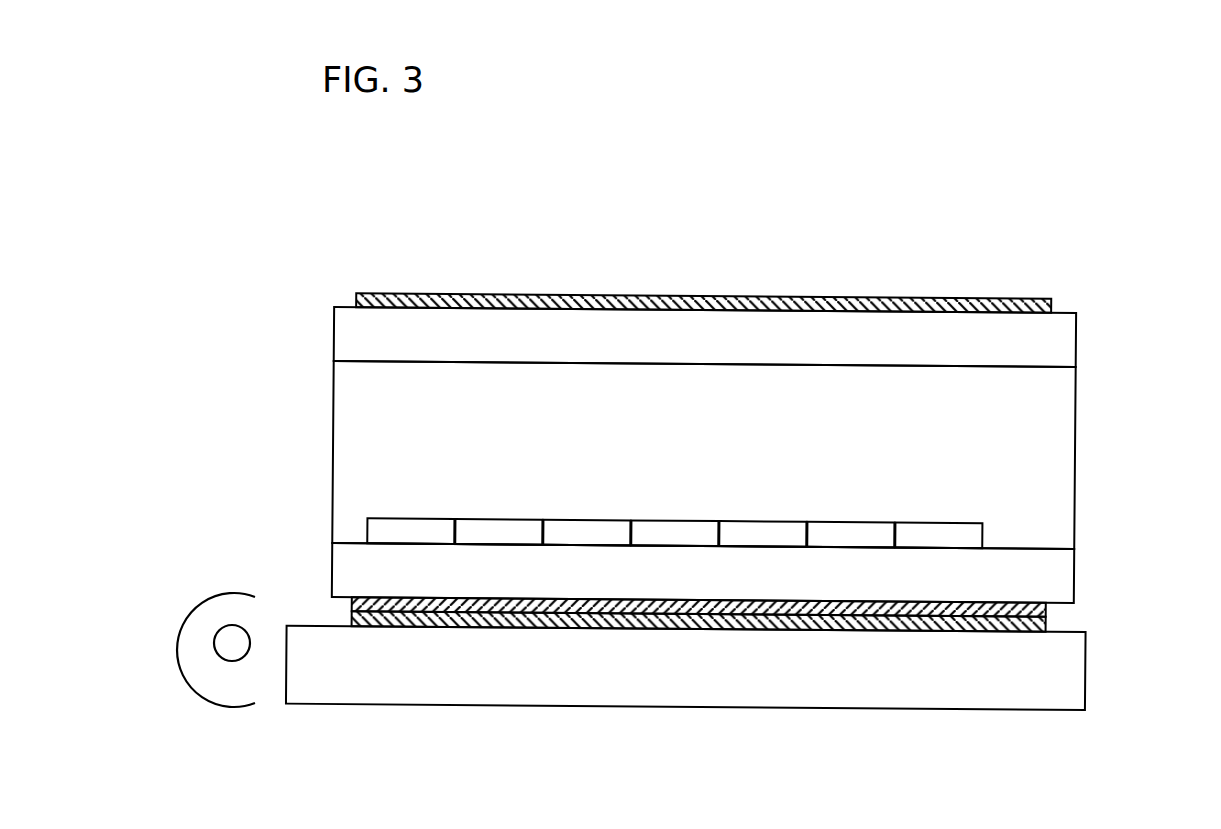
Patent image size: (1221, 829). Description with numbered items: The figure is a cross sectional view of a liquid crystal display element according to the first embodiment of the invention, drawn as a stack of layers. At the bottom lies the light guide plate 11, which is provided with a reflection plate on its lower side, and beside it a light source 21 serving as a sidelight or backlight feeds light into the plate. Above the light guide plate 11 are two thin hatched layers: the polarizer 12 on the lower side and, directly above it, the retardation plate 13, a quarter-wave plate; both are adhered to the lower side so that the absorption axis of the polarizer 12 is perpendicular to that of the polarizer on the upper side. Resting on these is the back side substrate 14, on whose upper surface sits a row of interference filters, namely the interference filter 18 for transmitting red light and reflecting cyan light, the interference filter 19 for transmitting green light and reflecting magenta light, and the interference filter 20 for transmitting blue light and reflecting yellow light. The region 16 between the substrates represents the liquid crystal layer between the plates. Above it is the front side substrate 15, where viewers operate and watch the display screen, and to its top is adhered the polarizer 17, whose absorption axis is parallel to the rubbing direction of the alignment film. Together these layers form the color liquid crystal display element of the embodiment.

The light guide plate 11 is at (1042, 673).
The polarizer 12 is at (1035, 635).
The retardation plate 13 is at (1045, 610).
The back side substrate 14 is at (345, 562).
The front side substrate 15 is at (355, 334).
The cell gap / liquid layer 16 is at (375, 450).
The polarizer 17 is at (520, 295).
The interference filter 18 is at (430, 517).
The interference filter 19 is at (510, 518).
The interference filter 20 is at (592, 518).
The light source 21 is at (223, 653).